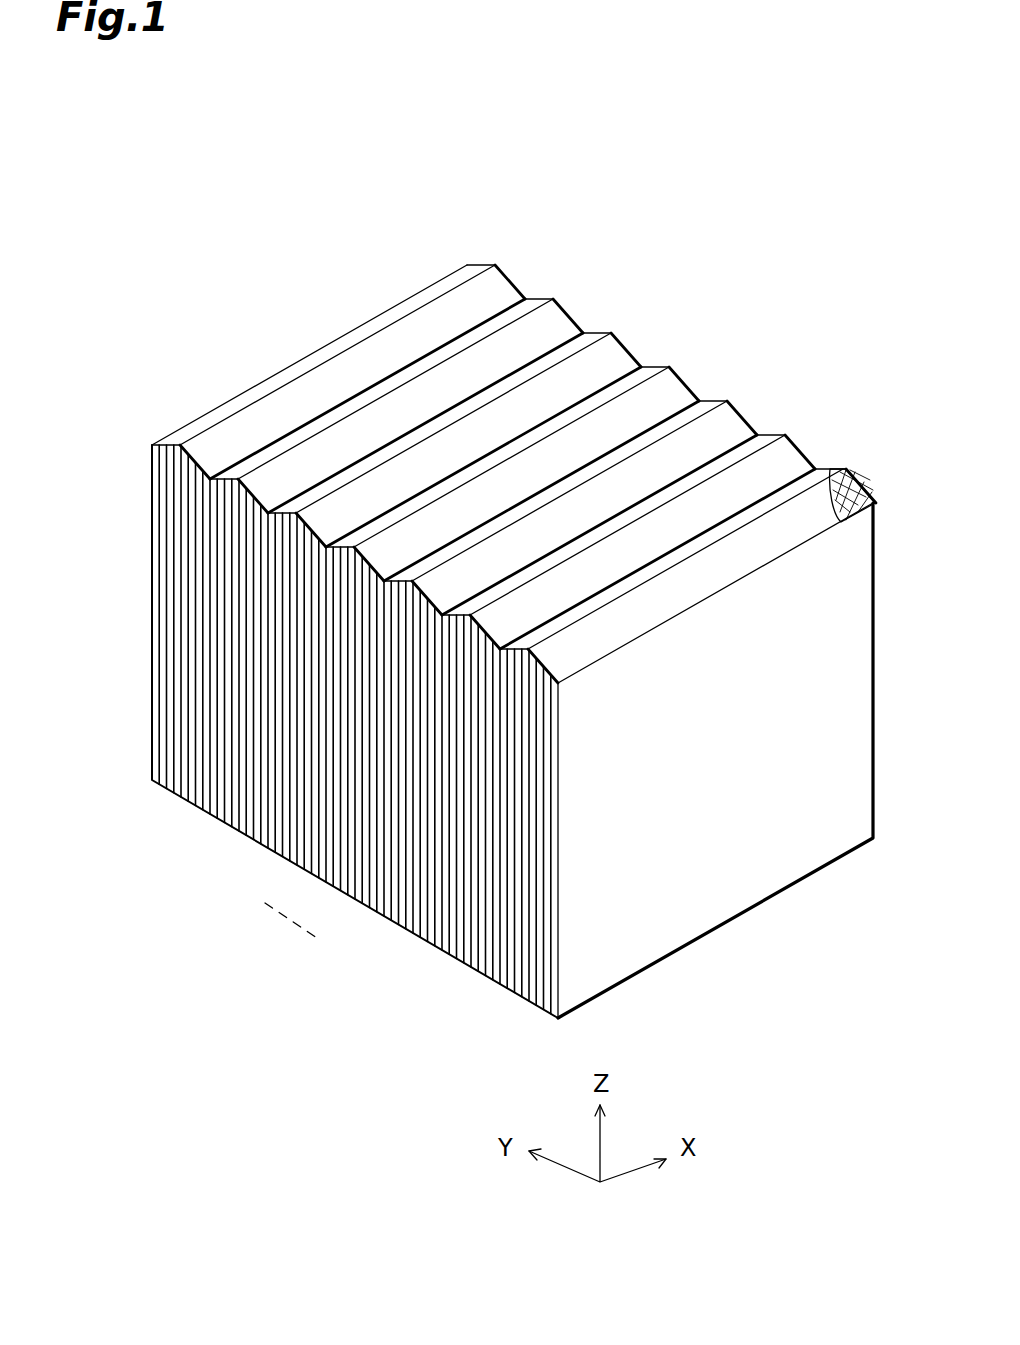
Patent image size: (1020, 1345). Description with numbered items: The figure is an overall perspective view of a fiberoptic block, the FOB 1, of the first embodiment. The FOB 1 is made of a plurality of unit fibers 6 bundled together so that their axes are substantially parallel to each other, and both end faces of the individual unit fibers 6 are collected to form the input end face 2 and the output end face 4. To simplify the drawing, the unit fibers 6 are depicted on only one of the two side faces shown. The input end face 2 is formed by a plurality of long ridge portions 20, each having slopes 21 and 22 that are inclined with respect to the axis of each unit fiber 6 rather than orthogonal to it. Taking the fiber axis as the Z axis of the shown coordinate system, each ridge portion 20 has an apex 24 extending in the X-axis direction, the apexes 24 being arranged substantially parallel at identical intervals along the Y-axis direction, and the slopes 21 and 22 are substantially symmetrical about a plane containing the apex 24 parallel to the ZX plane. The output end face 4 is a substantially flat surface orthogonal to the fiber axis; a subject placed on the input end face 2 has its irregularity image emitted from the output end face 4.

The fiberoptic block (FOB) 1 is at (806, 318).
The input end face 2 is at (726, 420).
The output end face 4 is at (738, 915).
The unit fibers 6 is at (152, 783).
The ridge portions 20 is at (481, 263).
The slope 21 is at (193, 432).
The slope 22 is at (258, 420).
The apex 24 is at (808, 478).